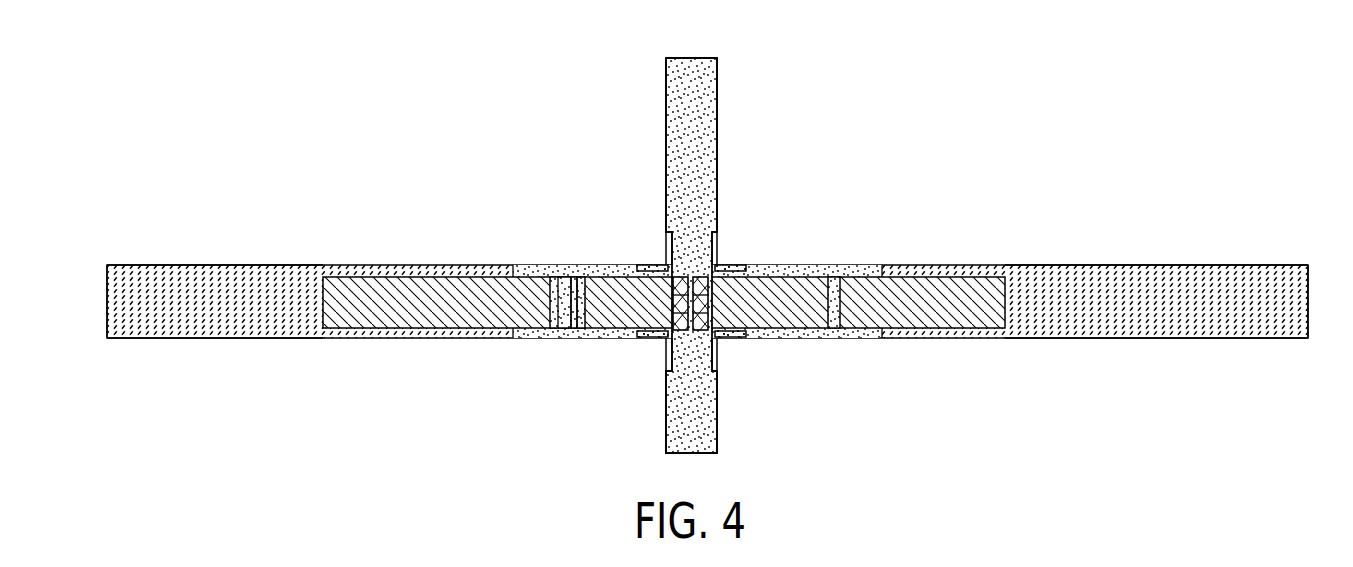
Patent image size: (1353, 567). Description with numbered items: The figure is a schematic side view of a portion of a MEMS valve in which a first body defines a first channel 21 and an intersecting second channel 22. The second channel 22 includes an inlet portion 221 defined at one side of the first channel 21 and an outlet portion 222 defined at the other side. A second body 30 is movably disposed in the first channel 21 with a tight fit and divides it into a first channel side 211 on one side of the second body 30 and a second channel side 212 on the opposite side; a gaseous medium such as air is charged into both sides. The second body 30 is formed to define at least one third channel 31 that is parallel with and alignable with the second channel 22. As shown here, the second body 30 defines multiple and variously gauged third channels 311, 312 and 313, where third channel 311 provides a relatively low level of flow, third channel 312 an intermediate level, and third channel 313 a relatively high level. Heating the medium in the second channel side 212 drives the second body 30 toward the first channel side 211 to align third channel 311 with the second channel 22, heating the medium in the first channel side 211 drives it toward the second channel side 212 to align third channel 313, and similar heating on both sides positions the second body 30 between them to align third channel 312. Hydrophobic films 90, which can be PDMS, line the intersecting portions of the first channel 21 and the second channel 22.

The first channel 21 is at (707, 299).
The first channel side 211 is at (165, 320).
The second channel side 212 is at (1093, 331).
The second channel 22 is at (690, 255).
The inlet portion 221 is at (687, 418).
The outlet portion 222 is at (705, 118).
The second body 30 is at (375, 312).
The third channel 31 is at (688, 332).
The third channel 311 is at (833, 295).
The third channel 312 is at (703, 320).
The third channel 313 is at (572, 303).
The hydrophobic films 90 is at (658, 268).